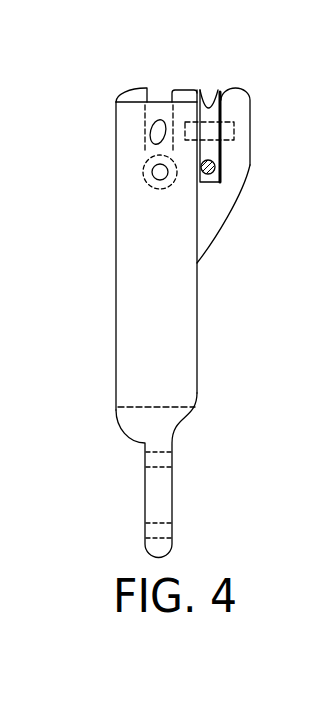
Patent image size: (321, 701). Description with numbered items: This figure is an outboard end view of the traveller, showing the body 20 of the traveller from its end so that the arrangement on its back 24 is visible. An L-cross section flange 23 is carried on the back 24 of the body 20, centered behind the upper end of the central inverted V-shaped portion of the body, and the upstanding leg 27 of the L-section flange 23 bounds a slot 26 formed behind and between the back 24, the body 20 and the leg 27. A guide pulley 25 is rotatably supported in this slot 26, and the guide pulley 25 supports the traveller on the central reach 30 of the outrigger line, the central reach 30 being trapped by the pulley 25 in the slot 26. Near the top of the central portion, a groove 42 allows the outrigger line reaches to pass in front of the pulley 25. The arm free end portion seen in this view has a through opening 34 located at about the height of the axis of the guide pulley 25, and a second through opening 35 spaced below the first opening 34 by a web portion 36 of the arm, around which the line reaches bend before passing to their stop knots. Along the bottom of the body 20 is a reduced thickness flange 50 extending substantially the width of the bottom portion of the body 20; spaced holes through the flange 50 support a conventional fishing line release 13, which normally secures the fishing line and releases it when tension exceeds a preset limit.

The fishing line release 13 is at (95, 308).
The body 20 is at (113, 339).
The L-cross section flange 23 is at (222, 198).
The back 24 is at (197, 363).
The guide pulley 25 is at (212, 112).
The slot 26 is at (216, 202).
The upstanding leg 27 is at (240, 116).
The central reach 30 is at (214, 172).
The through opening 34 is at (152, 132).
The second through opening 35 is at (152, 170).
The web portion 36 is at (147, 150).
The groove 42 is at (147, 95).
The reduced thickness flange 50 is at (172, 505).